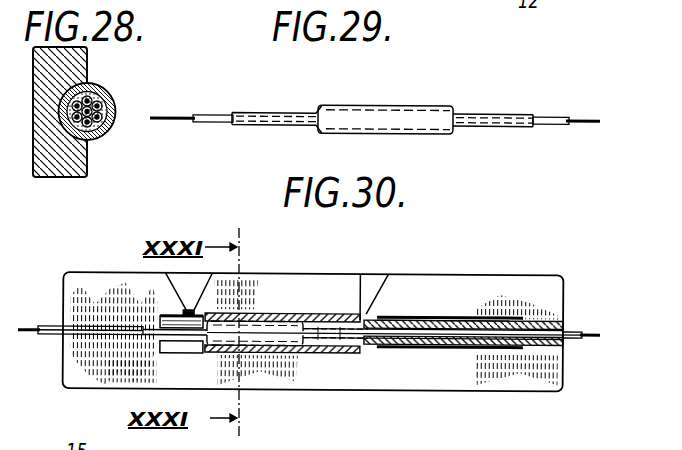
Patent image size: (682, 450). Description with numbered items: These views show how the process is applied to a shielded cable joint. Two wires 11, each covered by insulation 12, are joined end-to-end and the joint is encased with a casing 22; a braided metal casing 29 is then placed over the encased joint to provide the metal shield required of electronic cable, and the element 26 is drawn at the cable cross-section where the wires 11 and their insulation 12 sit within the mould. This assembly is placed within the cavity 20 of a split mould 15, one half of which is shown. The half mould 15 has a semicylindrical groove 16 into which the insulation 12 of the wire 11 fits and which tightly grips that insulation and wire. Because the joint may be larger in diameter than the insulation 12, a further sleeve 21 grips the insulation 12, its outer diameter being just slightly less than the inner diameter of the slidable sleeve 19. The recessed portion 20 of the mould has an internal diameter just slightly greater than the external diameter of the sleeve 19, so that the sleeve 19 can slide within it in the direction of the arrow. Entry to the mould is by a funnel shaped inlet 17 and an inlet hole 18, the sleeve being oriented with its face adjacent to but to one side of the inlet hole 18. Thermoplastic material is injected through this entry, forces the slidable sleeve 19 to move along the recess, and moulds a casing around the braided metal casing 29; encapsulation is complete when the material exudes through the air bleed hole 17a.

In FIG. 28, the wire 11 is at (110, 123).
In FIG. 29, the wire 11 is at (178, 115).
In FIG. 30, the wire 11 is at (30, 325).
In FIG. 29, the insulation 12 is at (215, 111).
In FIG. 30, the insulation 12 is at (70, 335).
In FIG. 28, the split mould 15 is at (75, 166).
In FIG. 30, the split mould 15 is at (112, 270).
In FIG. 30, the semicylindrical groove 16 is at (113, 325).
In FIG. 30, the funnel shaped inlet 17 is at (200, 300).
In FIG. 30, the air bleed hole 17a is at (357, 296).
In FIG. 30, the inlet hole 18 is at (196, 308).
In FIG. 28, the sleeve 19 is at (106, 94).
In FIG. 30, the sleeve 19 is at (362, 315).
In FIG. 30, the recessed portion 20 is at (427, 315).
In FIG. 30, the further sleeve 21 is at (463, 318).
In FIG. 29, the casing 22 is at (380, 118).
In FIG. 30, the casing 22 is at (302, 343).
In FIG. 28, the cable core 26 is at (111, 117).
In FIG. 29, the braided metal casing 29 is at (315, 108).
In FIG. 30, the braided metal casing 29 is at (207, 343).